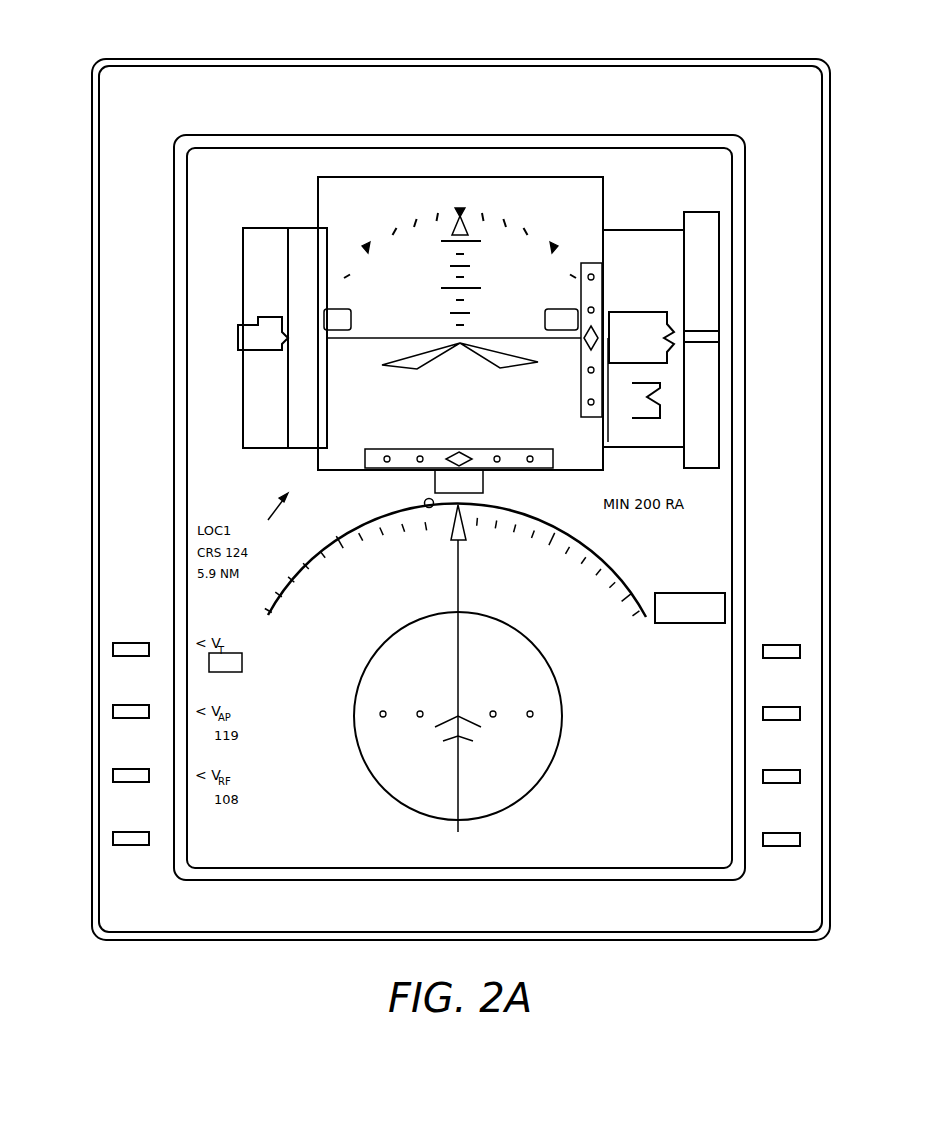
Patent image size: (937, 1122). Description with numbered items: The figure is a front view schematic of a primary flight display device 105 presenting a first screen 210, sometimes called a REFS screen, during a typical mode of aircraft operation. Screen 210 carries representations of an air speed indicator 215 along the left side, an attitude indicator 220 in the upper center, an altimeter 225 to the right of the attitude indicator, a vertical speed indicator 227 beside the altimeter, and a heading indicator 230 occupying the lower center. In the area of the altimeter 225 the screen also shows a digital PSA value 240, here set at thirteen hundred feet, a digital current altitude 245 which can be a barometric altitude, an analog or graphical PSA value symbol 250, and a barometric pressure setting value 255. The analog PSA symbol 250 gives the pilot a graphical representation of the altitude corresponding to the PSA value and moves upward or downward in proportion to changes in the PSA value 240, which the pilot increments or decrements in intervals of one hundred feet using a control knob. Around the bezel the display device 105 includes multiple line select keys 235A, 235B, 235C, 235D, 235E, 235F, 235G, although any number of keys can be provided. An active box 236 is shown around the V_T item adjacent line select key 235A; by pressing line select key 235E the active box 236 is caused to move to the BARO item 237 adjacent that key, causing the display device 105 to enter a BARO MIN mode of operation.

The display device 105 is at (537, 60).
The first screen 210 is at (222, 182).
The air speed indicator 215 is at (243, 317).
The attitude indicator 220 is at (411, 177).
The altimeter 225 is at (657, 243).
The vertical speed indicator 227 is at (705, 235).
The heading indicator 230 is at (436, 524).
The line select key 235A is at (113, 650).
The line select key 235B is at (113, 712).
The line select key 235C is at (113, 776).
The line select key 235D is at (113, 839).
The line select key 235E is at (800, 714).
The line select key 235F is at (800, 777).
The line select key 235G is at (800, 840).
The active box 236 is at (243, 662).
The BARO item 237 is at (668, 695).
The digital PSA value 240 is at (632, 185).
The digital current altitude 245 is at (657, 325).
The analog PSA value symbol 250 is at (670, 395).
The barometric pressure setting value 255 is at (668, 478).